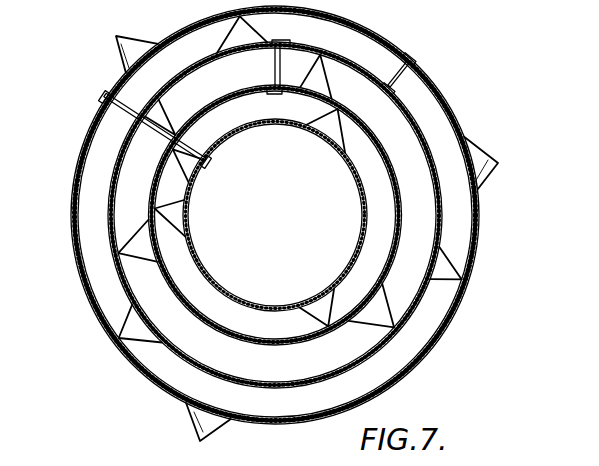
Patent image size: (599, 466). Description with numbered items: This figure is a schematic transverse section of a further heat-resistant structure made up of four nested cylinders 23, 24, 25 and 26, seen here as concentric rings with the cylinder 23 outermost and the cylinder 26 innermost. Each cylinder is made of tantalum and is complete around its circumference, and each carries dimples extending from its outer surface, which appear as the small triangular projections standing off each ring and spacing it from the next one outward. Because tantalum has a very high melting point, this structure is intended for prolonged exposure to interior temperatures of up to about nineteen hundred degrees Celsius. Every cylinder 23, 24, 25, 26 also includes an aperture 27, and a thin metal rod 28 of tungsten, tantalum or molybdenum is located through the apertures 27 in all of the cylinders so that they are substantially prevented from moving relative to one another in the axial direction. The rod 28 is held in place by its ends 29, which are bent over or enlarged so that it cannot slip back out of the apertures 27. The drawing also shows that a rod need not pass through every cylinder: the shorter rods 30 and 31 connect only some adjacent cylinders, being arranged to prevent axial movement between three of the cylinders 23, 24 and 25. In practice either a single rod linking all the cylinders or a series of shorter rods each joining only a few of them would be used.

The nested cylinder 23 is at (475, 241).
The nested cylinder 24 is at (443, 212).
The nested cylinder 25 is at (300, 337).
The nested cylinder 26 is at (357, 252).
The aperture 27 is at (142, 115).
The thin metal rod 28 is at (107, 122).
The rod ends 29 is at (105, 94).
The rod 30 is at (275, 60).
The rod 31 is at (397, 87).